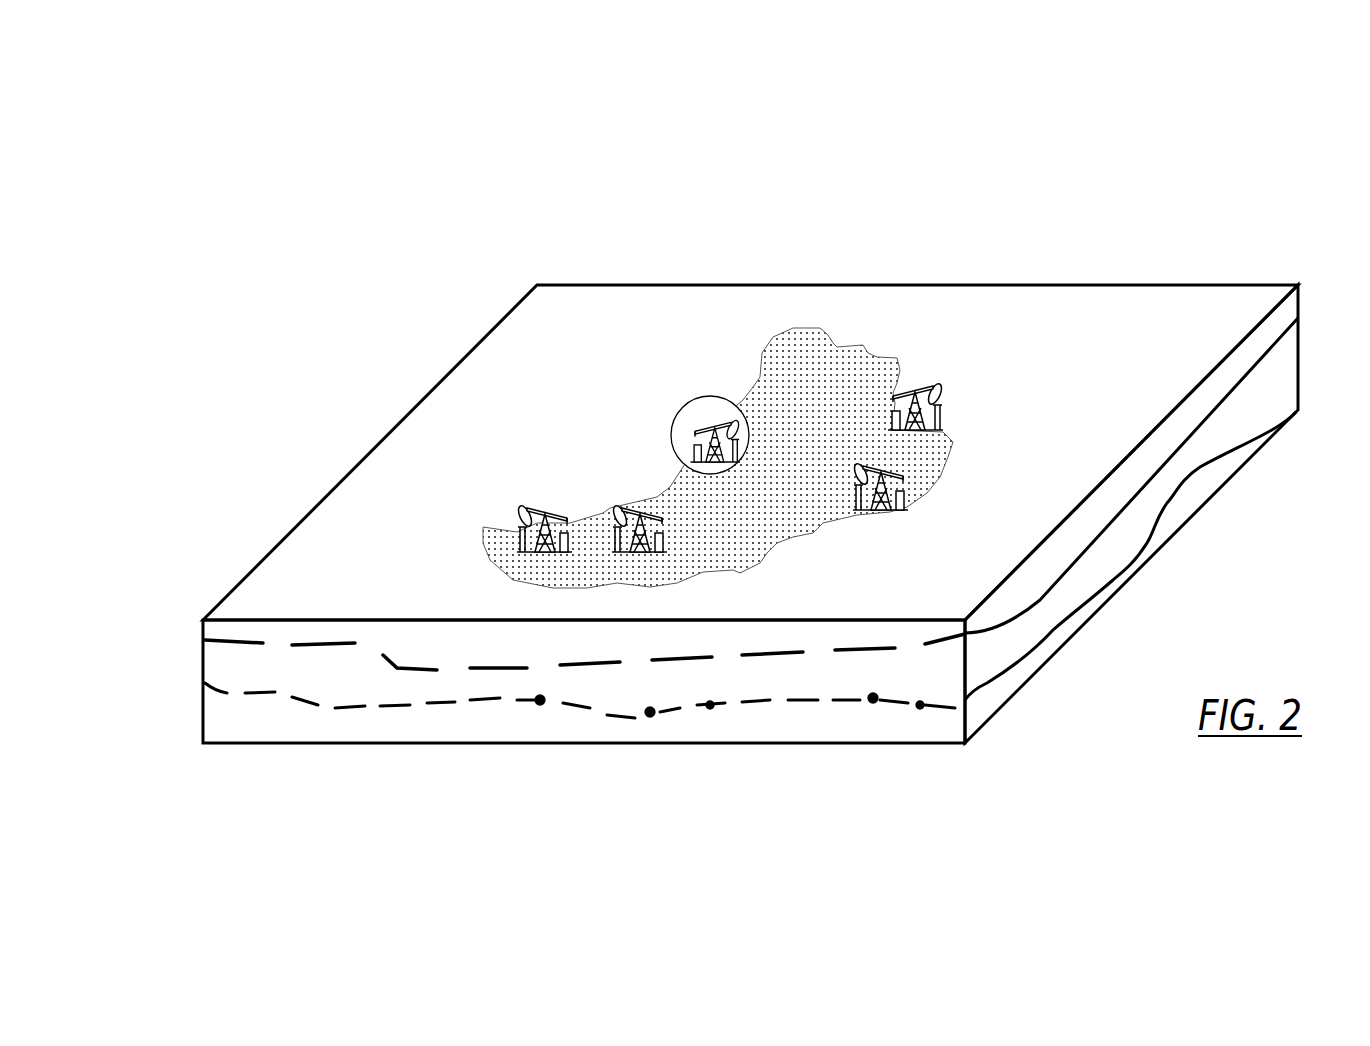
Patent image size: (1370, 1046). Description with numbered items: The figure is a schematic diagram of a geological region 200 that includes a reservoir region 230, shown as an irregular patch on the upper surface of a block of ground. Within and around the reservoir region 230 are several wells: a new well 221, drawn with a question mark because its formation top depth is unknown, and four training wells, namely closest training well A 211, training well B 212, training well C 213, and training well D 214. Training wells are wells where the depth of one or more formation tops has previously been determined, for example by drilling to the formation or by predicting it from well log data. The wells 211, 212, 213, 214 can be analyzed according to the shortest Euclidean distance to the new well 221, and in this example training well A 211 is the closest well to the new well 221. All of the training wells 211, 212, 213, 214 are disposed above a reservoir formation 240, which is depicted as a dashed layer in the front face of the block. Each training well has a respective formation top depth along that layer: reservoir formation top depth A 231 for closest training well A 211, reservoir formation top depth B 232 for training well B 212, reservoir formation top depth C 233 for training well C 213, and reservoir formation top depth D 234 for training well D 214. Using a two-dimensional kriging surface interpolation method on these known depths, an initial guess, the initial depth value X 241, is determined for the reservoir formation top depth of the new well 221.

The geological region 200 is at (994, 130).
The closest training well A 211 is at (889, 534).
The training well B 212 is at (953, 360).
The training well C 213 is at (616, 479).
The training well D 214 is at (526, 494).
The new well 221 is at (658, 424).
The reservoir region 230 is at (848, 336).
The reservoir formation top depth A 231 is at (870, 722).
The reservoir formation top depth B 232 is at (934, 715).
The reservoir formation top depth C 233 is at (652, 731).
The reservoir formation top depth D 234 is at (532, 718).
The reservoir formation 240 is at (585, 685).
The initial depth value X 241 is at (716, 719).